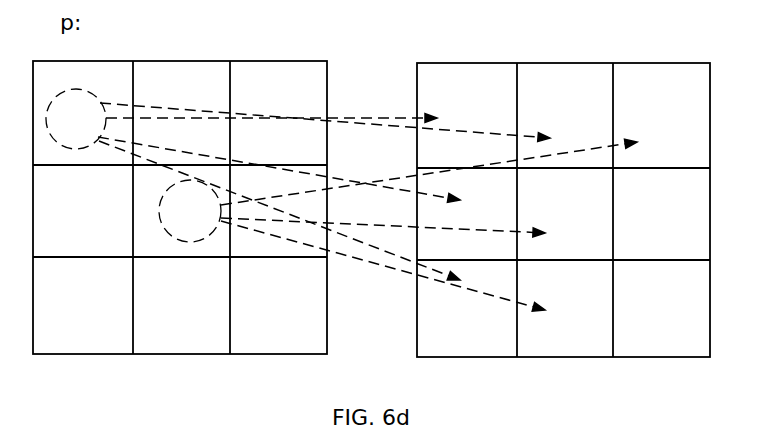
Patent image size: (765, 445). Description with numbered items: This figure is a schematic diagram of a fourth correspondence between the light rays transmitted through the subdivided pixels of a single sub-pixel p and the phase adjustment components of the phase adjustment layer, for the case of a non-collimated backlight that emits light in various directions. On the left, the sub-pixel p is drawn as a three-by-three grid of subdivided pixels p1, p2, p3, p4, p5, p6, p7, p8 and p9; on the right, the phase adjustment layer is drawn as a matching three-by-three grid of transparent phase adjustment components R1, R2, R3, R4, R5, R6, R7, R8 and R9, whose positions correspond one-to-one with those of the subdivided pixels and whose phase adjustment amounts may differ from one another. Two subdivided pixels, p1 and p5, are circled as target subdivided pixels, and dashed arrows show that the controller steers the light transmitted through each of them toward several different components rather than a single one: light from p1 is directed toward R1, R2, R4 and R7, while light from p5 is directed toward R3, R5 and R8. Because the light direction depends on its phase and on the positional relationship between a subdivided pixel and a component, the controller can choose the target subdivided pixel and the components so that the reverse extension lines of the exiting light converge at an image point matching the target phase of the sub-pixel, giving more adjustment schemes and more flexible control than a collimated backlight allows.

The subdivided pixel p1 is at (76, 119).
The subdivided pixel p2 is at (181, 113).
The subdivided pixel p3 is at (278, 113).
The subdivided pixel p4 is at (83, 211).
The subdivided pixel p5 is at (190, 211).
The subdivided pixel p6 is at (278, 211).
The subdivided pixel p7 is at (83, 305).
The subdivided pixel p8 is at (181, 305).
The subdivided pixel p9 is at (278, 305).
The phase adjustment component R1 is at (467, 115).
The phase adjustment component R2 is at (565, 115).
The phase adjustment component R3 is at (661, 115).
The phase adjustment component R4 is at (467, 214).
The phase adjustment component R5 is at (565, 214).
The phase adjustment component R6 is at (661, 214).
The phase adjustment component R7 is at (467, 308).
The phase adjustment component R8 is at (565, 308).
The phase adjustment component R9 is at (661, 308).